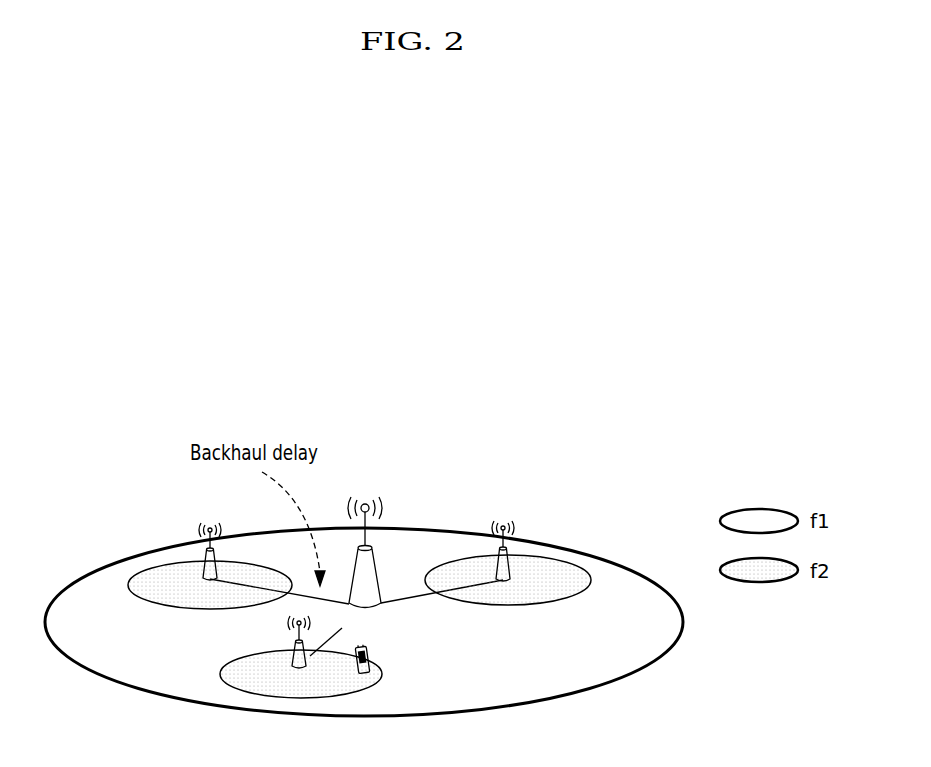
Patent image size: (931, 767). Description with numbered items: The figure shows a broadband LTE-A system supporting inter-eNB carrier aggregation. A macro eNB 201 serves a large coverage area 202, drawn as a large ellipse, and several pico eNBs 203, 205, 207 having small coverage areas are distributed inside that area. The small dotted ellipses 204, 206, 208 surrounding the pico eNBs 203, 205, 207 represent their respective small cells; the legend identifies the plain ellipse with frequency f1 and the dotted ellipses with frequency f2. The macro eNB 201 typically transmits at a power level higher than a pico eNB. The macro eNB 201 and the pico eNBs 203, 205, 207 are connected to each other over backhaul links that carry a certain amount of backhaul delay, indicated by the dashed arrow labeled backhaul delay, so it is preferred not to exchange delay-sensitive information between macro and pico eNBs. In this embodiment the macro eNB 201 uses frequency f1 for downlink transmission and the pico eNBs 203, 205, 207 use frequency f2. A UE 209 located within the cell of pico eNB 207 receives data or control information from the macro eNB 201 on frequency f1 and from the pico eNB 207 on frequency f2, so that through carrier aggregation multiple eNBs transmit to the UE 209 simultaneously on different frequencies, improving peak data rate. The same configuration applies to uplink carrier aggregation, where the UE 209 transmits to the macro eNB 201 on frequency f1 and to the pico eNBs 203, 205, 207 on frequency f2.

The macro eNB 201 is at (377, 499).
The coverage area of the macro eNB 202 is at (62, 597).
The pico eNB 203 is at (510, 523).
The pico cell coverage area (frequency f2) 204 is at (574, 561).
The pico eNB 205 is at (197, 528).
The pico cell coverage area (frequency f2) 206 is at (152, 567).
The pico eNB 207 is at (288, 652).
The pico cell coverage area (frequency f2) 208 is at (222, 668).
The UE 209 is at (372, 656).